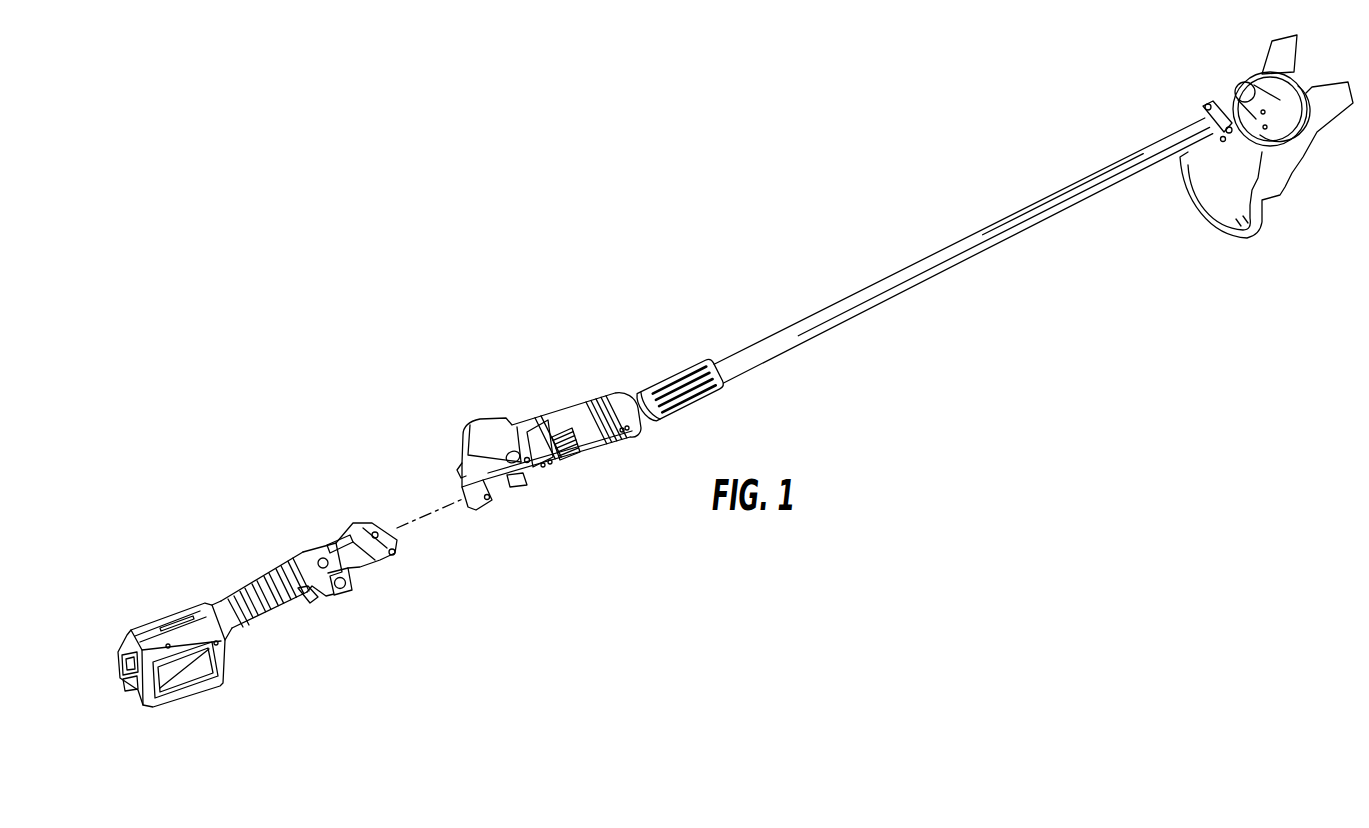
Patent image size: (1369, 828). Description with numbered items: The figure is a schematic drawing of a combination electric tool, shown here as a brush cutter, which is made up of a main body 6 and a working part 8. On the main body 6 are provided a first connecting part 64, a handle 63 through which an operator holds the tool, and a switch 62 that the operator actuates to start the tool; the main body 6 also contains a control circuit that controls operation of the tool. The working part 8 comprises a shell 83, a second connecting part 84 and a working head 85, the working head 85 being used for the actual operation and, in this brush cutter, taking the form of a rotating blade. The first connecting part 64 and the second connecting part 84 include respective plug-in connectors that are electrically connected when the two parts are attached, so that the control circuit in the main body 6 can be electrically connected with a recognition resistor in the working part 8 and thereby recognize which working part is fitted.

The main body 6 is at (234, 552).
The switch 62 is at (306, 598).
The handle 63 is at (262, 612).
The first connecting part 64 is at (367, 553).
The working part 8 is at (695, 311).
The shell 83 is at (587, 430).
The second connecting part 84 is at (502, 485).
The working head 85 is at (1318, 105).